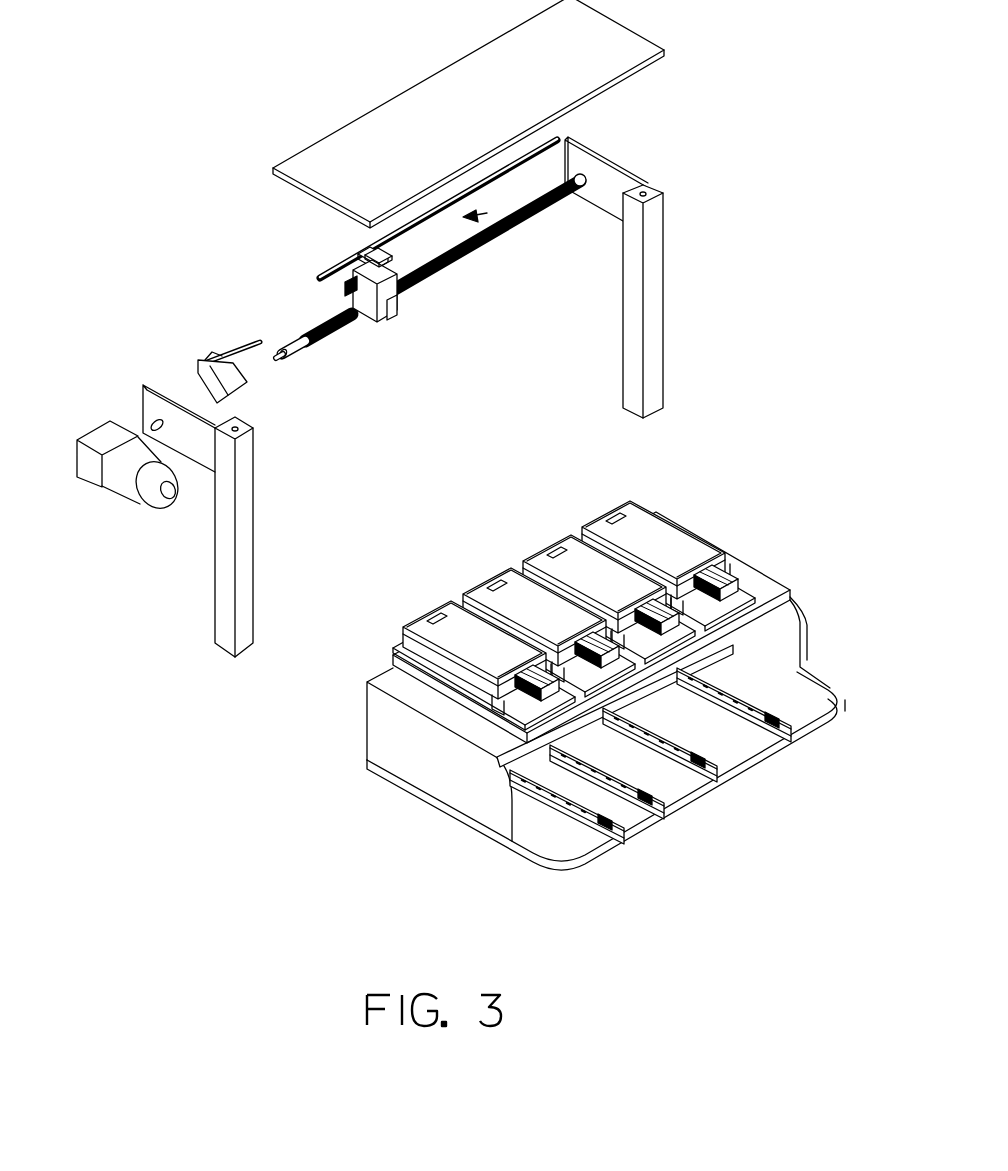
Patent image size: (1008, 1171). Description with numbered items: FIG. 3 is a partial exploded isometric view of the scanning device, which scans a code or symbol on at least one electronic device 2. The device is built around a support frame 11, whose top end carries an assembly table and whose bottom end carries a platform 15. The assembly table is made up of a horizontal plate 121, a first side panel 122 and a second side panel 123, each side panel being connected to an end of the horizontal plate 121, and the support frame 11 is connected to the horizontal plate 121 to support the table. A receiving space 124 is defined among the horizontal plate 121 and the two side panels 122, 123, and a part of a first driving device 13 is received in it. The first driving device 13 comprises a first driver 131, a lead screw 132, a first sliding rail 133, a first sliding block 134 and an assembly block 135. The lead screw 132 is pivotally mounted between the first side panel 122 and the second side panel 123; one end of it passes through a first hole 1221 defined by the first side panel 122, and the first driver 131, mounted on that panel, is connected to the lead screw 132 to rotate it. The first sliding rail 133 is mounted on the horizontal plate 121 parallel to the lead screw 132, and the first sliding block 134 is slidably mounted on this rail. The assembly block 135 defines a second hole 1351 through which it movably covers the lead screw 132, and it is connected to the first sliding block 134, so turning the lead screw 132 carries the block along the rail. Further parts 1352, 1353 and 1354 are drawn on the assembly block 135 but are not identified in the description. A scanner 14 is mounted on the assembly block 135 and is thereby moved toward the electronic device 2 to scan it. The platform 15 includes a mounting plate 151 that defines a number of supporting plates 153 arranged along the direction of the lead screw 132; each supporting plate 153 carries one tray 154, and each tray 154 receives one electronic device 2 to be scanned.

The electronic device 2 is at (748, 507).
The support frame 11 is at (652, 308).
The first driving device 13 is at (70, 318).
The scanner 14 is at (242, 388).
The platform 15 is at (573, 680).
The horizontal plate 121 is at (447, 80).
The first side panel 122 is at (203, 460).
The second side panel 123 is at (612, 162).
The receiving space 124 is at (523, 227).
The first driver 131 is at (103, 438).
The lead screw 132 is at (300, 328).
The first sliding rail 133 is at (323, 273).
The first sliding block 134 is at (358, 246).
The assembly block 135 is at (345, 304).
The mounting plate 151 is at (808, 705).
The supporting plate 153 is at (450, 686).
The tray 154 is at (427, 657).
The first hole 1221 is at (163, 423).
The second hole 1351 is at (370, 298).
The moving block 1352 is at (380, 280).
The side plate 1353 is at (393, 310).
The top slot plate 1354 is at (402, 249).